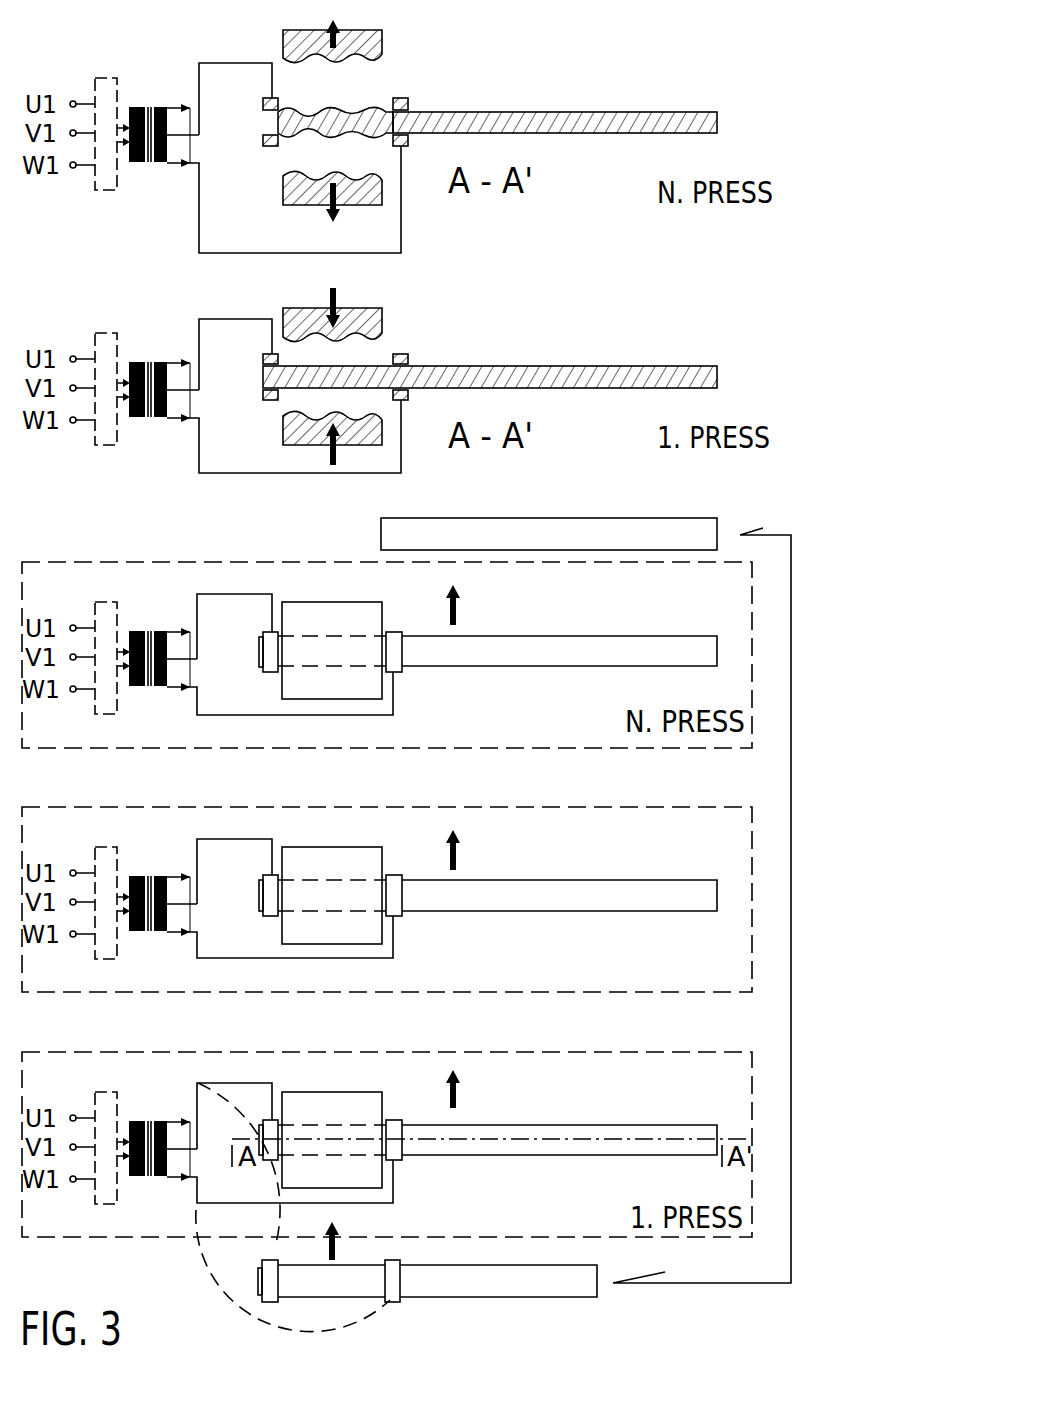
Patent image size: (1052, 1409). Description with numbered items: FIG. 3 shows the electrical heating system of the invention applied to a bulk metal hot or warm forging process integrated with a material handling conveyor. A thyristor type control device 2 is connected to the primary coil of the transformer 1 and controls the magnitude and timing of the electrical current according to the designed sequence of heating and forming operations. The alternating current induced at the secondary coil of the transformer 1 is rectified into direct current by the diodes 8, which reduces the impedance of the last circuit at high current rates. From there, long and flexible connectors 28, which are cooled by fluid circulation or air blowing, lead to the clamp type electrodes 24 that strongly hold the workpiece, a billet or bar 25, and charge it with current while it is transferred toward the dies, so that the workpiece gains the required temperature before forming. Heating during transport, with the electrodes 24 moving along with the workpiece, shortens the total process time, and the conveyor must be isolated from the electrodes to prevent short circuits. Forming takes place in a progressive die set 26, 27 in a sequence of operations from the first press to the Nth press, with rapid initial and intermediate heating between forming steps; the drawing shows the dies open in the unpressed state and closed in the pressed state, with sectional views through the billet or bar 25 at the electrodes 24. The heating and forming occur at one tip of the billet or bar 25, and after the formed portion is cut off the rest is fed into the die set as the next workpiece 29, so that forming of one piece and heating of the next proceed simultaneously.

The transformer 1 is at (144, 163).
The thyristor type control device 2 is at (113, 189).
The diodes 8 is at (175, 167).
The clamp type electrodes 24 is at (403, 98).
The billet or bar 25 is at (452, 117).
The progressive die set (upper die) 26 is at (382, 48).
The progressive die set (lower die) 27 is at (283, 195).
The connectors 28 is at (237, 63).
The next workpiece 29 is at (570, 518).